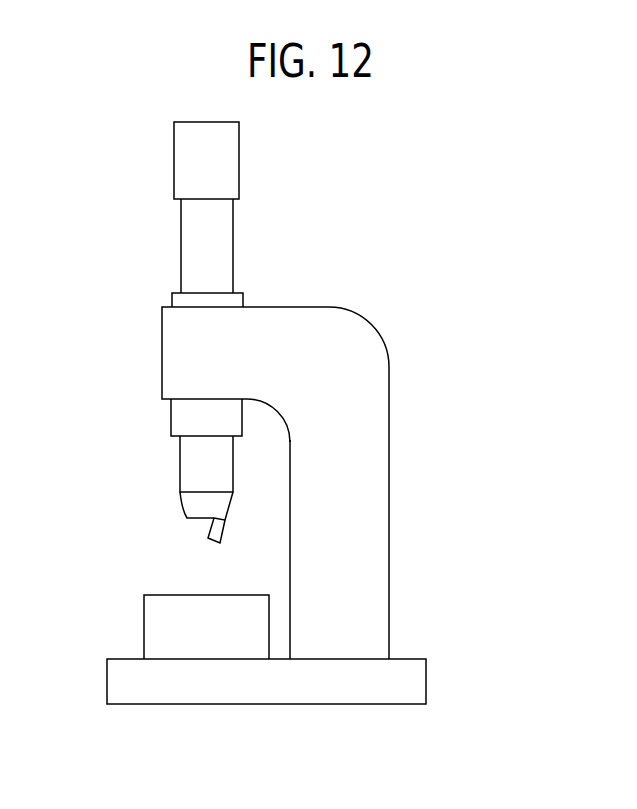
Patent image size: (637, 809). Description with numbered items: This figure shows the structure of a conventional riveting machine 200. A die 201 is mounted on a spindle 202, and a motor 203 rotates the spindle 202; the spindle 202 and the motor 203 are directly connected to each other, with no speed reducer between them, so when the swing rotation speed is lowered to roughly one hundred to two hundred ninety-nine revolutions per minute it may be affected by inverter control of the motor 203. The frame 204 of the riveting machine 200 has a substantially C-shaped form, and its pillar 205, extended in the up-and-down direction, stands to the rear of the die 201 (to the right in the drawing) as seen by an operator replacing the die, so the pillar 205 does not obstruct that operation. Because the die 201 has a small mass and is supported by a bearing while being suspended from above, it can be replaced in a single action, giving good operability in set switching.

The riveting machine 200 is at (269, 413).
The die 201 is at (195, 508).
The spindle 202 is at (198, 457).
The motor 203 is at (192, 157).
The frame 204 is at (347, 340).
The pillar 205 is at (367, 438).